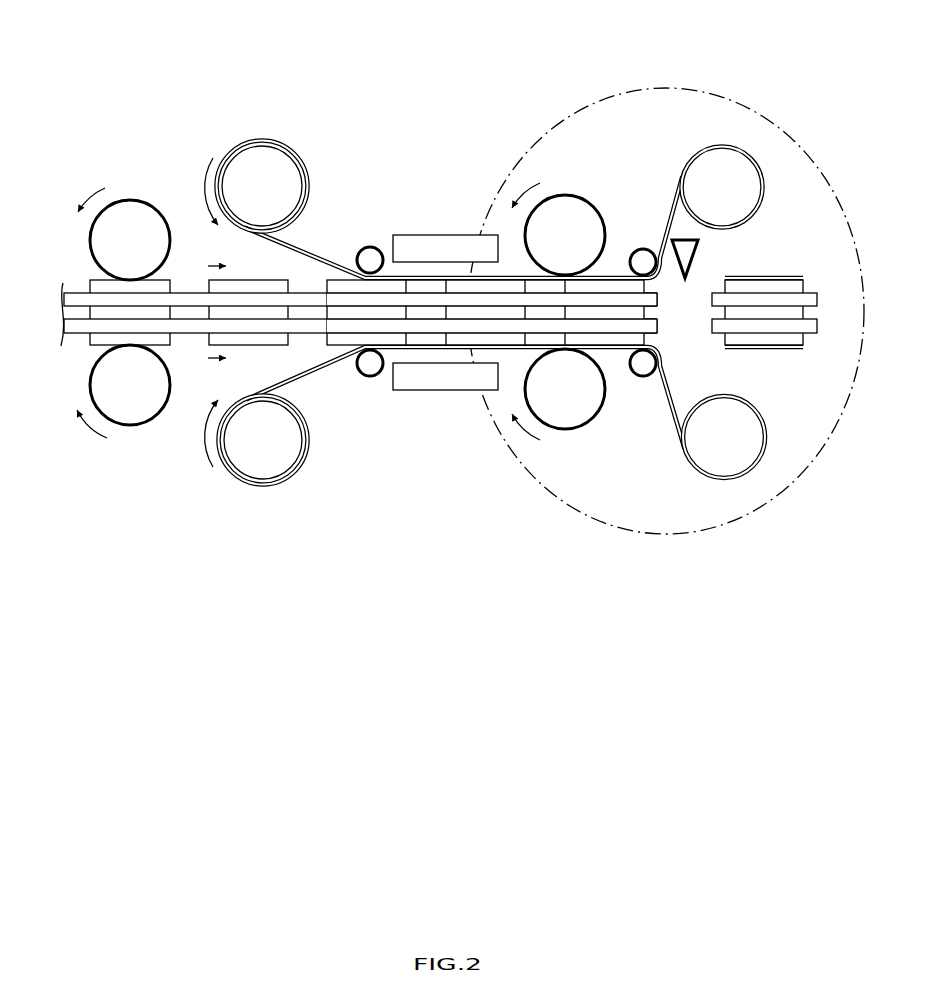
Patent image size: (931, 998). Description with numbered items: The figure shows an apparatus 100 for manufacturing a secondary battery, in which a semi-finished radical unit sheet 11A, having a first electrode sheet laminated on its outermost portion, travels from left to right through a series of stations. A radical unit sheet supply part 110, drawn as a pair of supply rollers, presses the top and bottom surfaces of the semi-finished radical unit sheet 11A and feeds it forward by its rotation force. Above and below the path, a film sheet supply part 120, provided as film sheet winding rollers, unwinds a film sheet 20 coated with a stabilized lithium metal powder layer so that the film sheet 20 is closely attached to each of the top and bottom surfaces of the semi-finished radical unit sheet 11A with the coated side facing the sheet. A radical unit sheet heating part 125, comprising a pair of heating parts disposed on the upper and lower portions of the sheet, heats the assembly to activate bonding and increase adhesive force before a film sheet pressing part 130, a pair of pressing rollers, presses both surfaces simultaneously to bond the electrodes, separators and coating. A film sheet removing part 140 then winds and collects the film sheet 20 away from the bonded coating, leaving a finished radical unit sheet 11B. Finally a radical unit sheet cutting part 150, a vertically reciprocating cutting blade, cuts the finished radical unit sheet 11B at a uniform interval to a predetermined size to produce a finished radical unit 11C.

The apparatus for manufacturing a secondary battery 100 is at (692, 70).
The radical unit sheet supply part 110 is at (130, 199).
The film sheet supply part 120 is at (262, 157).
The film sheet 20 is at (321, 255).
The radical unit sheet heating part 125 is at (447, 235).
The film sheet pressing part 130 is at (565, 195).
The film sheet removing part 140 is at (722, 158).
The radical unit sheet cutting part 150 is at (700, 262).
The semi-finished radical unit sheet 11A is at (89, 352).
The finished radical unit sheet 11B is at (648, 338).
The finished radical unit 11C is at (777, 256).